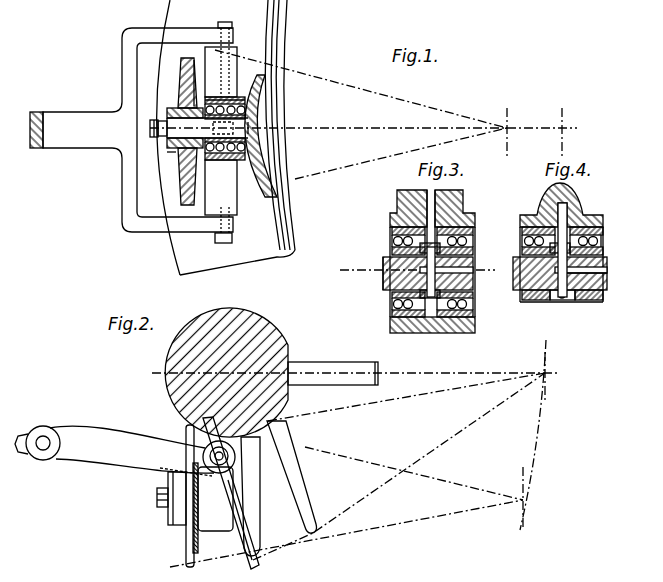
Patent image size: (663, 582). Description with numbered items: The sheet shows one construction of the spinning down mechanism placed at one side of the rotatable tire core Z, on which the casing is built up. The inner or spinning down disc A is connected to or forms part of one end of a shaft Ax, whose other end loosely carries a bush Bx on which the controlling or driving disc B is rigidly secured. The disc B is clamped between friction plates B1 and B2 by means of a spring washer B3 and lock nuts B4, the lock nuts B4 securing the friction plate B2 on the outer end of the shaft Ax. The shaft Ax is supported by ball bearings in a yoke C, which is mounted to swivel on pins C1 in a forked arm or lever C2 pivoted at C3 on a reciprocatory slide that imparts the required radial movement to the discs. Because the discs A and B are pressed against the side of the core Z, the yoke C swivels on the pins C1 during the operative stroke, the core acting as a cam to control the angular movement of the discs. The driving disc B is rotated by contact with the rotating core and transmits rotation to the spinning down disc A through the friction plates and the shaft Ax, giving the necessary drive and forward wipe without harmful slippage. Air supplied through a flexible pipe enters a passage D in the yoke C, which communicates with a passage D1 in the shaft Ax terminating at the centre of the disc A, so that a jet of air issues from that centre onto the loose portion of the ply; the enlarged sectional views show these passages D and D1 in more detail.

In FIG. 1, the spinning down disc A is at (257, 98).
In FIG. 2, the spinning down disc A is at (260, 537).
In FIG. 3, the spinning down disc A is at (390, 268).
In FIG. 1, the shaft Ax is at (186, 150).
In FIG. 3, the shaft Ax is at (390, 283).
In FIG. 4, the shaft Ax is at (533, 285).
In FIG. 1, the controlling or driving disc B is at (182, 77).
In FIG. 2, the controlling or driving disc B is at (185, 563).
In FIG. 1, the friction plate B1 is at (197, 70).
In FIG. 2, the friction plate B1 is at (199, 537).
In FIG. 1, the friction plate B2 is at (178, 93).
In FIG. 2, the friction plate B2 is at (180, 540).
In FIG. 1, the spring washer B3 is at (220, 95).
In FIG. 1, the lock nuts B4 is at (152, 137).
In FIG. 2, the lock nuts B4 is at (157, 502).
In FIG. 1, the bush Bx is at (167, 152).
In FIG. 1, the yoke C is at (223, 187).
In FIG. 2, the yoke C is at (215, 499).
In FIG. 3, the yoke C is at (407, 200).
In FIG. 4, the yoke C is at (548, 217).
In FIG. 1, the pins C1 is at (233, 25).
In FIG. 2, the pins C1 is at (212, 452).
In FIG. 1, the forked arm or lever C2 is at (133, 46).
In FIG. 2, the forked arm or lever C2 is at (102, 453).
In FIG. 2, the pivot C3 is at (45, 440).
In FIG. 1, the passage D is at (247, 57).
In FIG. 3, the passage D is at (390, 213).
In FIG. 4, the passage D is at (570, 215).
In FIG. 1, the passage D1 is at (258, 132).
In FIG. 3, the passage D1 is at (473, 263).
In FIG. 4, the passage D1 is at (593, 273).
In FIG. 1, the rotatable tire core Z is at (190, 257).
In FIG. 2, the rotatable tire core Z is at (248, 323).